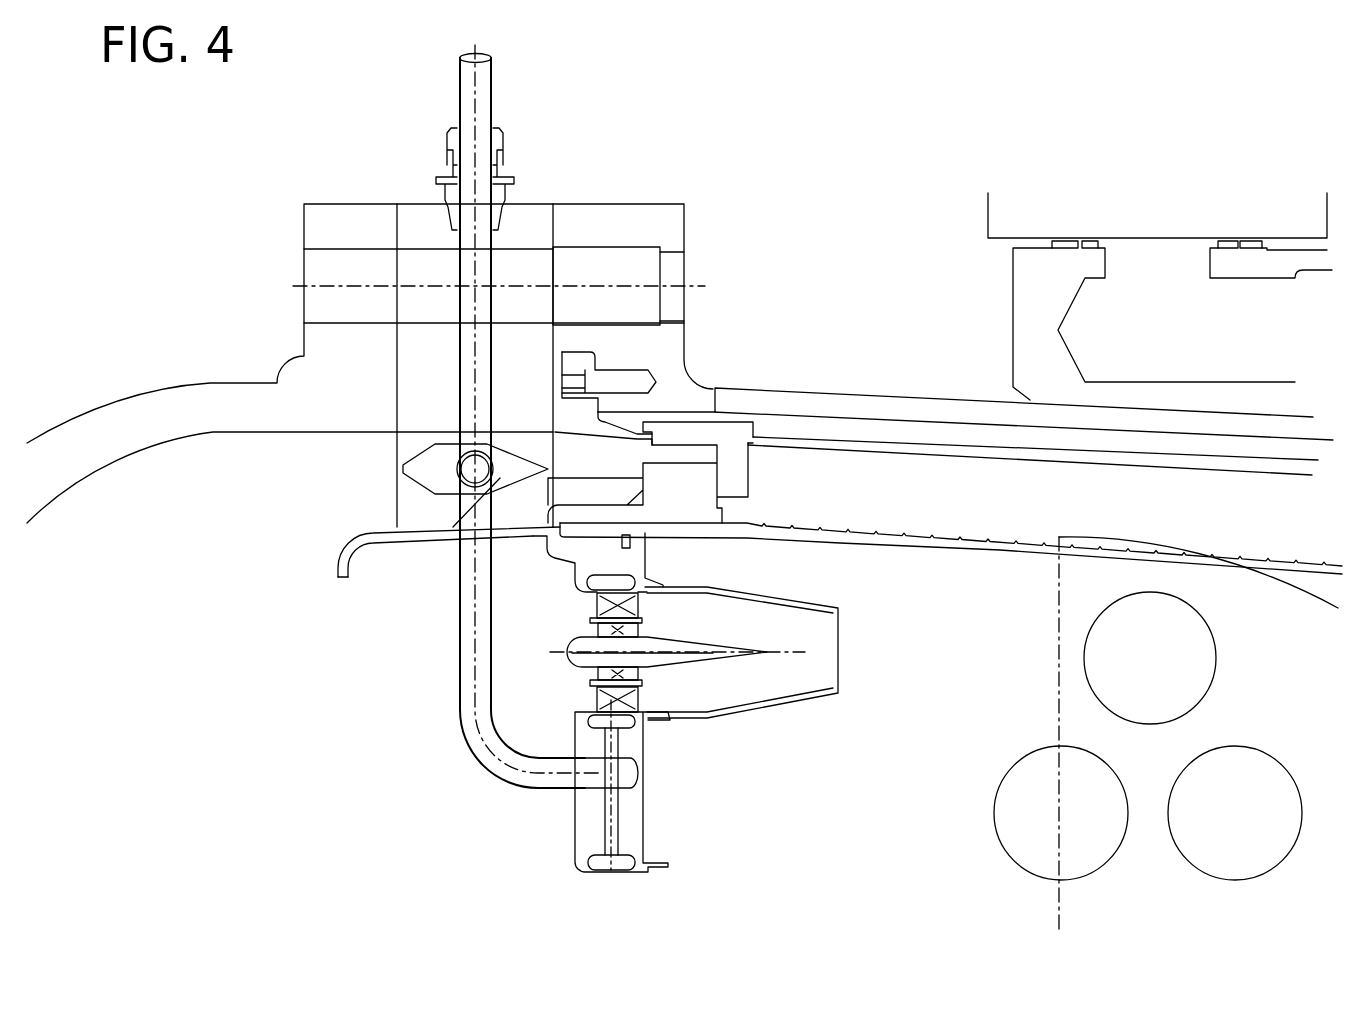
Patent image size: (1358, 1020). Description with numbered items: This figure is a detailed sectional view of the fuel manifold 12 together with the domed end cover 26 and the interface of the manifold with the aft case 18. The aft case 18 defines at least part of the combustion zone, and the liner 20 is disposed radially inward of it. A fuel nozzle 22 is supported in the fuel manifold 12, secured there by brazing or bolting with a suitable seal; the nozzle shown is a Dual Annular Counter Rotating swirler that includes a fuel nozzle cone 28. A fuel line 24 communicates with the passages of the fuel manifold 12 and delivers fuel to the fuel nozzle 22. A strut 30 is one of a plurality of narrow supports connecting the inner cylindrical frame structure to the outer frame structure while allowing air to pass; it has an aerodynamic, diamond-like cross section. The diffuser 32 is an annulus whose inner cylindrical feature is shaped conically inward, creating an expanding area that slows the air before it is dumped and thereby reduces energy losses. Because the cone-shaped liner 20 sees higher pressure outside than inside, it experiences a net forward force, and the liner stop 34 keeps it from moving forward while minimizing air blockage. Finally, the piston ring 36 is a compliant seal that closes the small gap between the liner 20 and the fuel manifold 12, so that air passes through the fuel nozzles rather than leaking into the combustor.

The fuel manifold 12 is at (628, 560).
The aft case 18 is at (937, 450).
The liner 20 is at (852, 543).
The fuel nozzle 22 is at (905, 662).
The fuel line 24 is at (462, 582).
The domed end cover 26 is at (178, 405).
The fuel nozzle cone 28 is at (849, 688).
The strut 30 is at (388, 459).
The diffuser 32 is at (333, 541).
The liner stop 34 is at (602, 460).
The piston ring 36 is at (641, 509).